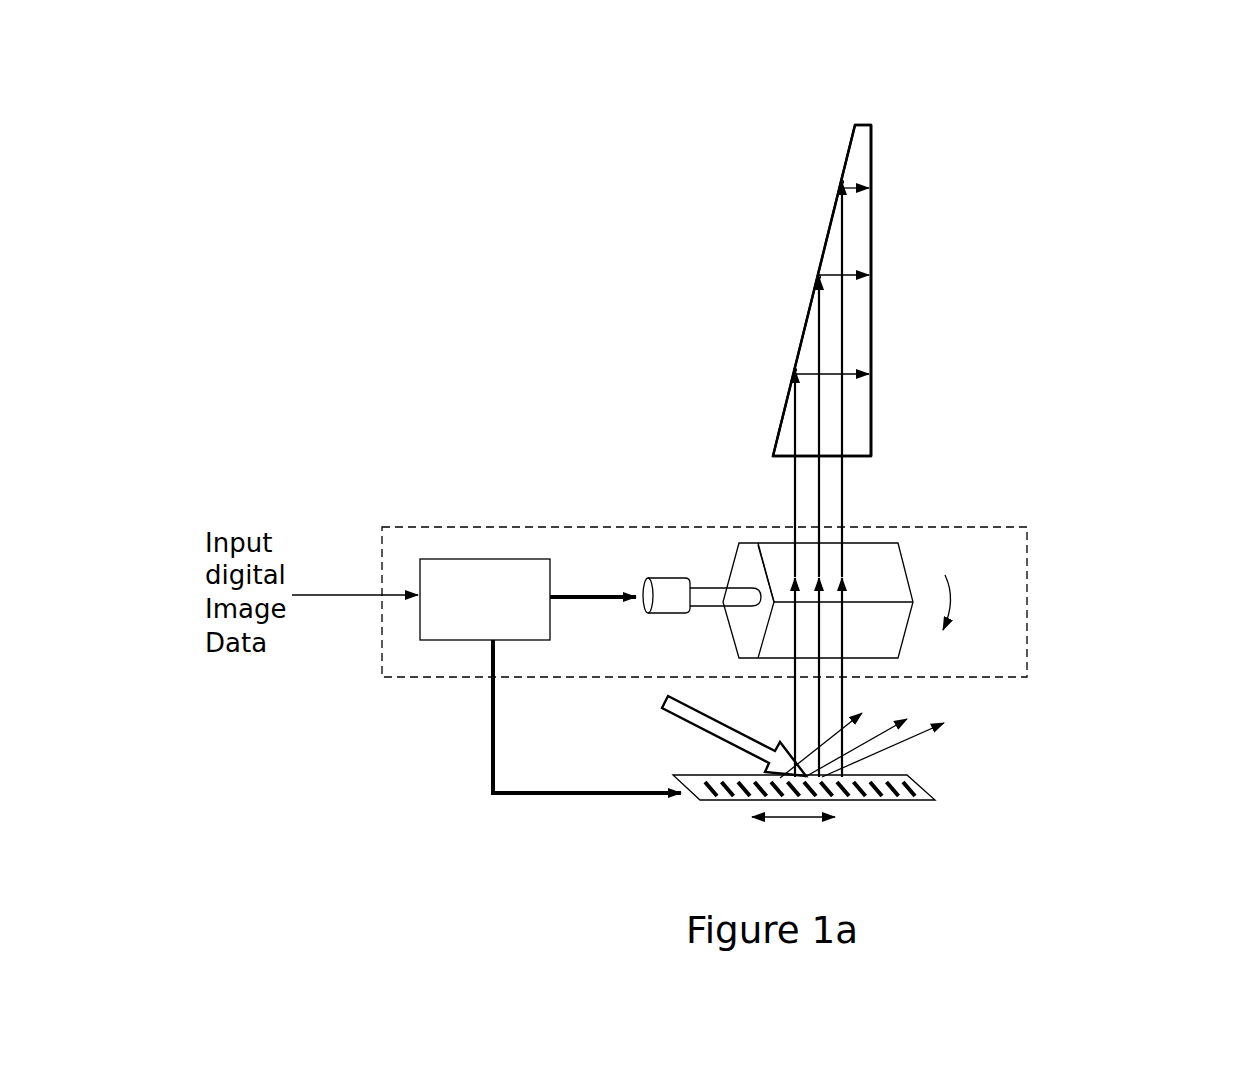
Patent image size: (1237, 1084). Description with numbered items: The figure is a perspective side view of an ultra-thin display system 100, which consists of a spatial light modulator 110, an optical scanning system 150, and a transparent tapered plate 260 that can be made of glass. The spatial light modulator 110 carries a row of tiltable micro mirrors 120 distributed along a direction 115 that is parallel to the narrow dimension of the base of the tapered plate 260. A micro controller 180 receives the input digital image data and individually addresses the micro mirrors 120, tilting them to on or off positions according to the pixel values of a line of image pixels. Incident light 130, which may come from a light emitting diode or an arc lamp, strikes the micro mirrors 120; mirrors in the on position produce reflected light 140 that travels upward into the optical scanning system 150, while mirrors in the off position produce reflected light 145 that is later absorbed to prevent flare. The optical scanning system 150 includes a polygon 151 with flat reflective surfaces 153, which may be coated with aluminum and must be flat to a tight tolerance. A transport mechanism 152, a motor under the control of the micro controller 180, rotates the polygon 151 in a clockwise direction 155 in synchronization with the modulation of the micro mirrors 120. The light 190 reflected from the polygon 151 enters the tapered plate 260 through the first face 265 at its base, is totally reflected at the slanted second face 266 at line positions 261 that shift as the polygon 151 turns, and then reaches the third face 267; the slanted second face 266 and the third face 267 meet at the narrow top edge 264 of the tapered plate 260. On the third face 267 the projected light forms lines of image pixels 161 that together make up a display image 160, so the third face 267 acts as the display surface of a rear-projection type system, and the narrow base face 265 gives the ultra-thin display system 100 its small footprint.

The ultra-thin display system 100 is at (1110, 282).
The spatial light modulator 110 is at (932, 796).
The direction 115 is at (793, 837).
The tiltable micro mirrors 120 is at (862, 790).
The incident light 130 is at (700, 734).
The reflected light in the on direction 140 is at (787, 527).
The reflected light in the off direction 145 is at (885, 735).
The optical scanning system 150 is at (548, 526).
The polygon 151 is at (912, 570).
The transport mechanism 152 is at (640, 584).
The flat reflective surfaces 153 is at (865, 568).
The clockwise direction 155 is at (971, 602).
The display image 160 is at (890, 388).
The lines of image pixels 161 is at (873, 375).
The micro controller 180 is at (535, 628).
The light reflected from the polygon 190 is at (846, 495).
The transparent tapered plate 260 is at (800, 150).
The line positions 261 is at (825, 196).
The wedge top 264 is at (867, 125).
The first face 265 is at (779, 459).
The slanted second face 266 is at (776, 420).
The third face 267 is at (876, 412).